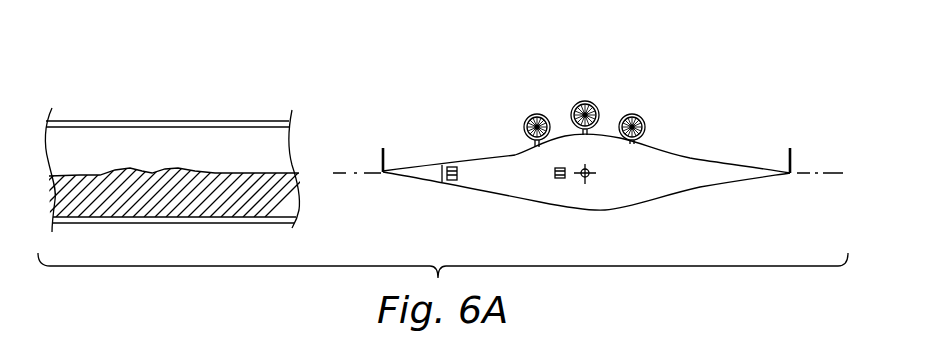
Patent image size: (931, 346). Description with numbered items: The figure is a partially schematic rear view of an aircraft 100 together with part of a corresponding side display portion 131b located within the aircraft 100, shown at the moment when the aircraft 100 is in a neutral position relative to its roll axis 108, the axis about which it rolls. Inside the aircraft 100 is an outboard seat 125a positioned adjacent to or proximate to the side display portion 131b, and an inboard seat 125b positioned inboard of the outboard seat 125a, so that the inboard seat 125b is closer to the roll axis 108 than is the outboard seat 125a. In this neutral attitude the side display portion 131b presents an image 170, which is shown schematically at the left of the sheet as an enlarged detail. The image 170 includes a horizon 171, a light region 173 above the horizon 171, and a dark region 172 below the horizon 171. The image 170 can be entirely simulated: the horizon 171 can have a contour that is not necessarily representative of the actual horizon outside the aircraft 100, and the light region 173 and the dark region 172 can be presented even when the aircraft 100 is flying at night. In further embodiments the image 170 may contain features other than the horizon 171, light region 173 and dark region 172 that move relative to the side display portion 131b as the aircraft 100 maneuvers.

The aircraft 100 is at (690, 158).
The roll axis 108 is at (589, 180).
The outboard seat 125a is at (452, 165).
The inboard seat 125b is at (555, 172).
The side display portion 131b is at (263, 125).
The image 170 is at (267, 158).
The horizon 171 is at (232, 173).
The dark region 172 is at (157, 185).
The light region 173 is at (90, 153).